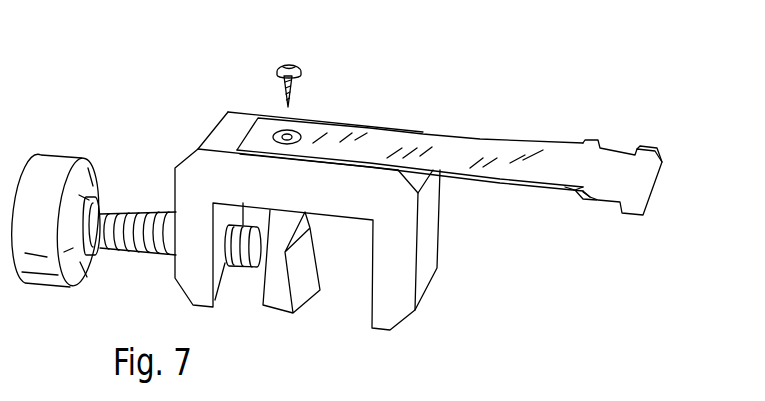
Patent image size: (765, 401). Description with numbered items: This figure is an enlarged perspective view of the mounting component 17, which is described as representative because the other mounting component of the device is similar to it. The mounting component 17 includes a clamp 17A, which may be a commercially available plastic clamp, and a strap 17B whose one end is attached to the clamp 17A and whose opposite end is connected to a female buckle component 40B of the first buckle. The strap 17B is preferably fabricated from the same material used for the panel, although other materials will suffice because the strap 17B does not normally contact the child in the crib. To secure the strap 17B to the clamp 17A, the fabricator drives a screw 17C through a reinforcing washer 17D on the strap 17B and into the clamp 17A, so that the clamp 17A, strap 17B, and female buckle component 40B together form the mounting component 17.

The mounting component 17 is at (301, 168).
The clamp 17A is at (433, 238).
The strap 17B is at (480, 150).
The screw 17C is at (293, 63).
The reinforcing washer 17D is at (300, 133).
The female buckle component 40B is at (650, 155).